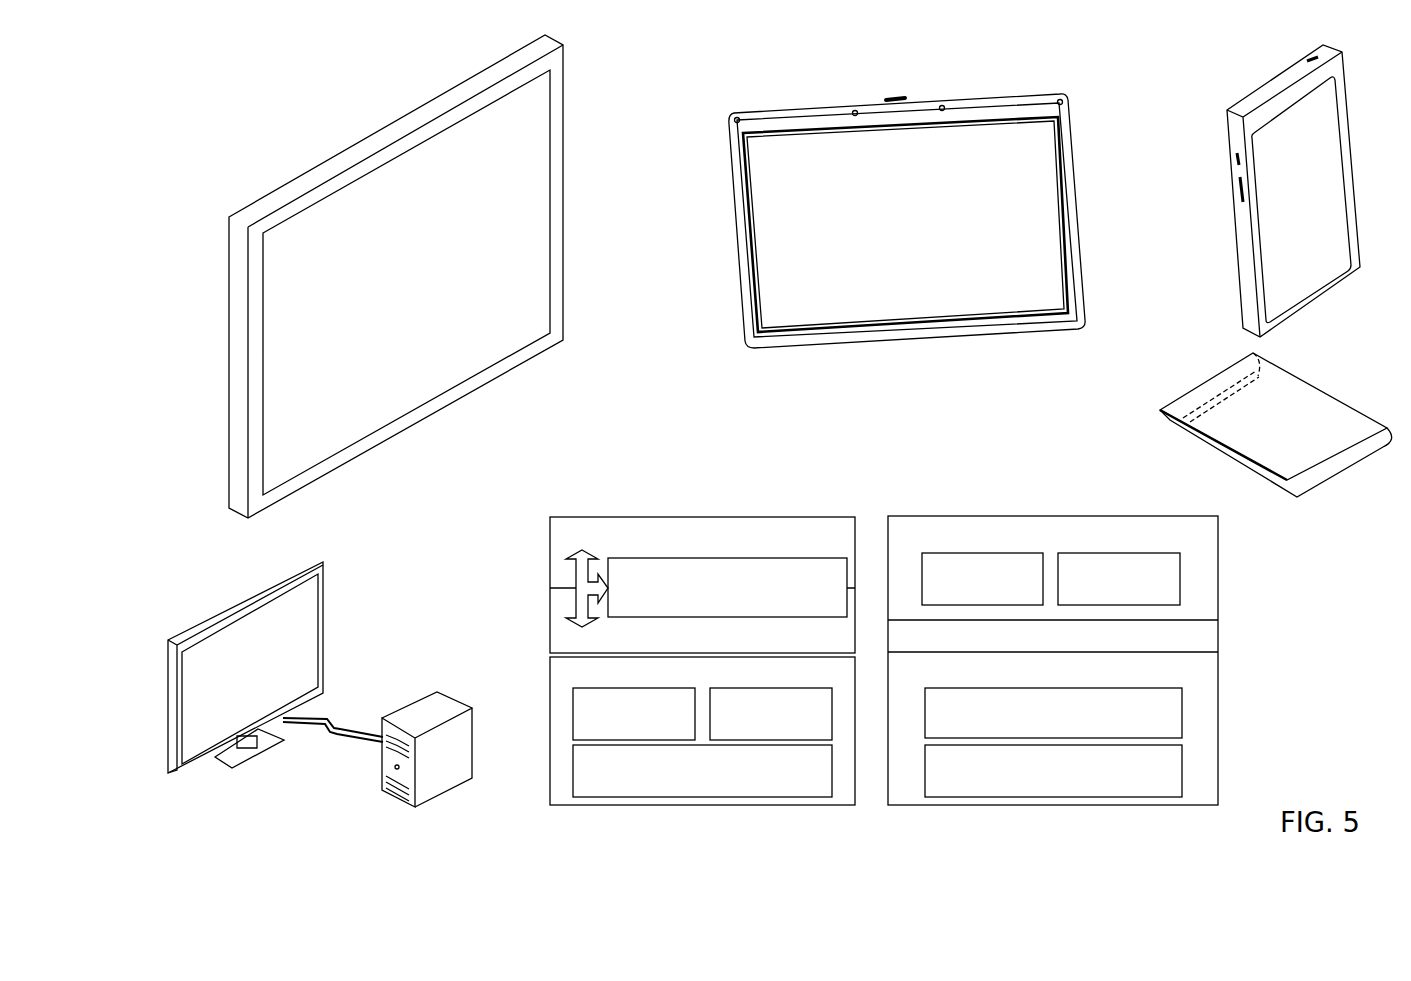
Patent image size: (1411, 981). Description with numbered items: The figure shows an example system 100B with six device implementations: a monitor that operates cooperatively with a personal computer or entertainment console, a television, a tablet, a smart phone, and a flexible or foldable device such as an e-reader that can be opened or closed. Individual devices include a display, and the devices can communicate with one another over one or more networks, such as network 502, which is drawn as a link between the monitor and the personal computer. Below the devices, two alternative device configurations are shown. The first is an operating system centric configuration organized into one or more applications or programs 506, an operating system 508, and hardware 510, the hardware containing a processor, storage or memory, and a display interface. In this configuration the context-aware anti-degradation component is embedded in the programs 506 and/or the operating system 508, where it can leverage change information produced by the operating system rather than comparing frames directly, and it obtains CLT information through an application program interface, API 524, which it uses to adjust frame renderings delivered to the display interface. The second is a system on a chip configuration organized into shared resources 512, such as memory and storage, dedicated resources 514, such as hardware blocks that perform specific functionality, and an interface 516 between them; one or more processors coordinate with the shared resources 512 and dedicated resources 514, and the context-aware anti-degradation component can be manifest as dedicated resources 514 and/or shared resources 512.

The system 100B is at (851, 216).
The network 502 is at (330, 738).
The programs 506 is at (778, 546).
The operating system 508 is at (737, 646).
The hardware 510 is at (770, 686).
The shared resources 512 is at (1163, 545).
The dedicated resources 514 is at (1175, 681).
The interface 516 is at (1118, 646).
The application program interface (API) 524 is at (566, 578).